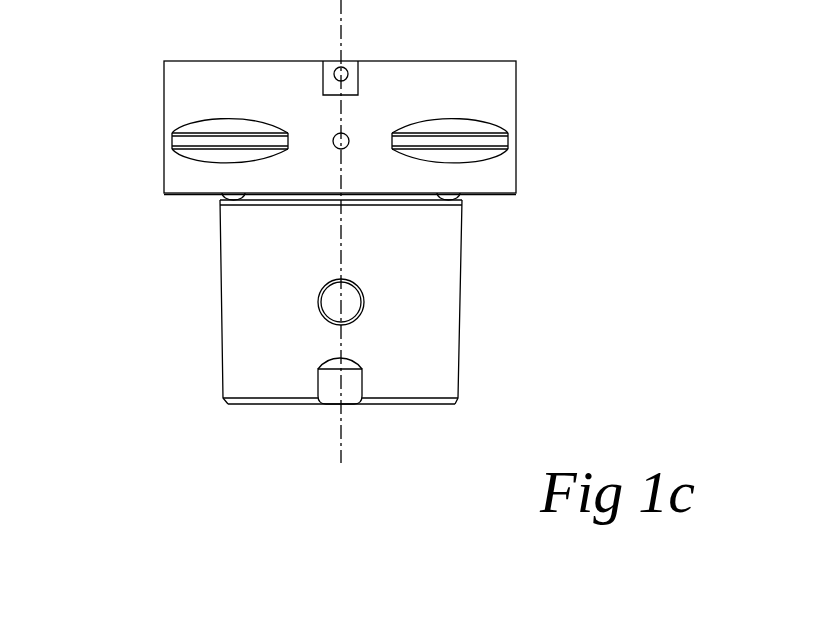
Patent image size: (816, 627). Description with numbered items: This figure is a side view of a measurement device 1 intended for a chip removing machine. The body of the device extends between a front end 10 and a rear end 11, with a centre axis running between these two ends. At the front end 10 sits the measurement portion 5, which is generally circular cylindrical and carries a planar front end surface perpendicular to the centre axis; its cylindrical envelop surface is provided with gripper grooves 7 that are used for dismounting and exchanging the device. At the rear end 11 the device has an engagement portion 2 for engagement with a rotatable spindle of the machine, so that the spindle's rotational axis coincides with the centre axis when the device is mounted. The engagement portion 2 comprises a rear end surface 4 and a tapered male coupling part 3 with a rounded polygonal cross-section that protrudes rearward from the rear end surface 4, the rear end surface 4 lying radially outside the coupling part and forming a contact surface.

The measurement device 1 is at (332, 231).
The front end 10 is at (332, 128).
The rear end 11 is at (336, 325).
The engagement portion 2 is at (221, 320).
The tapered male coupling part 3 is at (425, 342).
The rear end surface 4 is at (487, 192).
The measurement portion 5 is at (164, 108).
The gripper grooves 7 is at (487, 135).